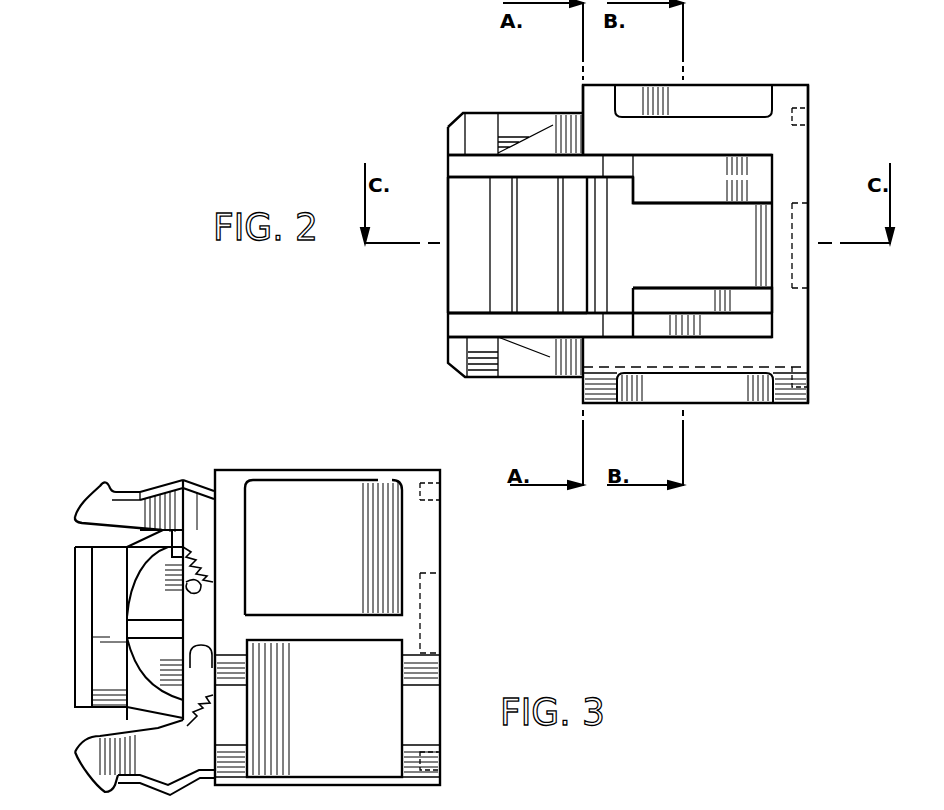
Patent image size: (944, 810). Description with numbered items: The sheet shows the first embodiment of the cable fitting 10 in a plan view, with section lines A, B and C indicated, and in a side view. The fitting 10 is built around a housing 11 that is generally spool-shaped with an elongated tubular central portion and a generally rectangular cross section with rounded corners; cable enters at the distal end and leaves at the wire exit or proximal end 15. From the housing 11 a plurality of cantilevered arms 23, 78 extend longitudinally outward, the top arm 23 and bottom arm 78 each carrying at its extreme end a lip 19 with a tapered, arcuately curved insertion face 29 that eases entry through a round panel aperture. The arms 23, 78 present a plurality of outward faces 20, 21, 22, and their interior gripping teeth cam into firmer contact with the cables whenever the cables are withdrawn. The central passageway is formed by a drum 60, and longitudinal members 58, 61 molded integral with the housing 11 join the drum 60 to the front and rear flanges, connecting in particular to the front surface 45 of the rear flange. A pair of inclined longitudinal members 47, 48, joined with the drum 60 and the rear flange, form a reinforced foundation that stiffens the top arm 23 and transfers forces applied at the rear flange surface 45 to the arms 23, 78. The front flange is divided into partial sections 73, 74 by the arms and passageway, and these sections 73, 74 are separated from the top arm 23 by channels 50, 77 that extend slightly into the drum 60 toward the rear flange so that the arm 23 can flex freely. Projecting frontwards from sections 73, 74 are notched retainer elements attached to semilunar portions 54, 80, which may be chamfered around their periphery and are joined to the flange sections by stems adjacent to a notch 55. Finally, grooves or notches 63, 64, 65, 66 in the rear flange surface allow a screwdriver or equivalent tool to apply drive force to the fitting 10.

In FIG. 3, the fitting 10 is at (210, 416).
In FIG. 2, the housing 11 is at (786, 85).
In FIG. 3, the housing 11 is at (393, 470).
In FIG. 2, the wire exit or proximal end 15 is at (366, 0).
In FIG. 2, the first tabs or lips 19 is at (473, 193).
In FIG. 3, the first tabs or lips 19 is at (105, 475).
In FIG. 2, the outward face 20 is at (497, 215).
In FIG. 3, the outward face 20 is at (122, 490).
In FIG. 2, the outward face 21 is at (542, 244).
In FIG. 3, the outward face 21 is at (163, 480).
In FIG. 2, the outward face 22 is at (583, 265).
In FIG. 3, the outward face 22 is at (195, 483).
In FIG. 2, the cantilevered arm 23 is at (448, 293).
In FIG. 3, the cantilevered arm 23 is at (75, 515).
In FIG. 2, the insertion face 29 is at (465, 232).
In FIG. 3, the insertion face 29 is at (90, 478).
In FIG. 2, the front surface of flange 46 45 is at (460, 6).
In FIG. 2, the inclined longitudinal member 47 is at (735, 300).
In FIG. 2, the inclined longitudinal member 48 is at (652, 200).
In FIG. 2, the channel 50 is at (477, 325).
In FIG. 2, the semilunar portion 54 is at (448, 350).
In FIG. 3, the semilunar portion 54 is at (75, 633).
In FIG. 3, the notch 55 is at (182, 600).
In FIG. 2, the longitudinal member 58 is at (728, 392).
In FIG. 3, the longitudinal member 58 is at (350, 618).
In FIG. 2, the drum 60 is at (712, 247).
In FIG. 3, the drum 60 is at (340, 694).
In FIG. 2, the longitudinal member 61 is at (718, 100).
In FIG. 2, the groove or notch 63 is at (812, 382).
In FIG. 3, the groove or notch 63 is at (445, 603).
In FIG. 2, the groove or notch 64 is at (812, 283).
In FIG. 3, the groove or notch 64 is at (443, 492).
In FIG. 2, the groove or notch 65 is at (812, 118).
In FIG. 3, the groove or notch 66 is at (445, 758).
In FIG. 2, the partial section of flange 43 73 is at (583, 393).
In FIG. 2, the partial section of flange 43 74 is at (583, 102).
In FIG. 2, the channel 77 is at (465, 165).
In FIG. 3, the cantilevered arm 78 is at (75, 755).
In FIG. 2, the semilunar portion 80 is at (449, 128).